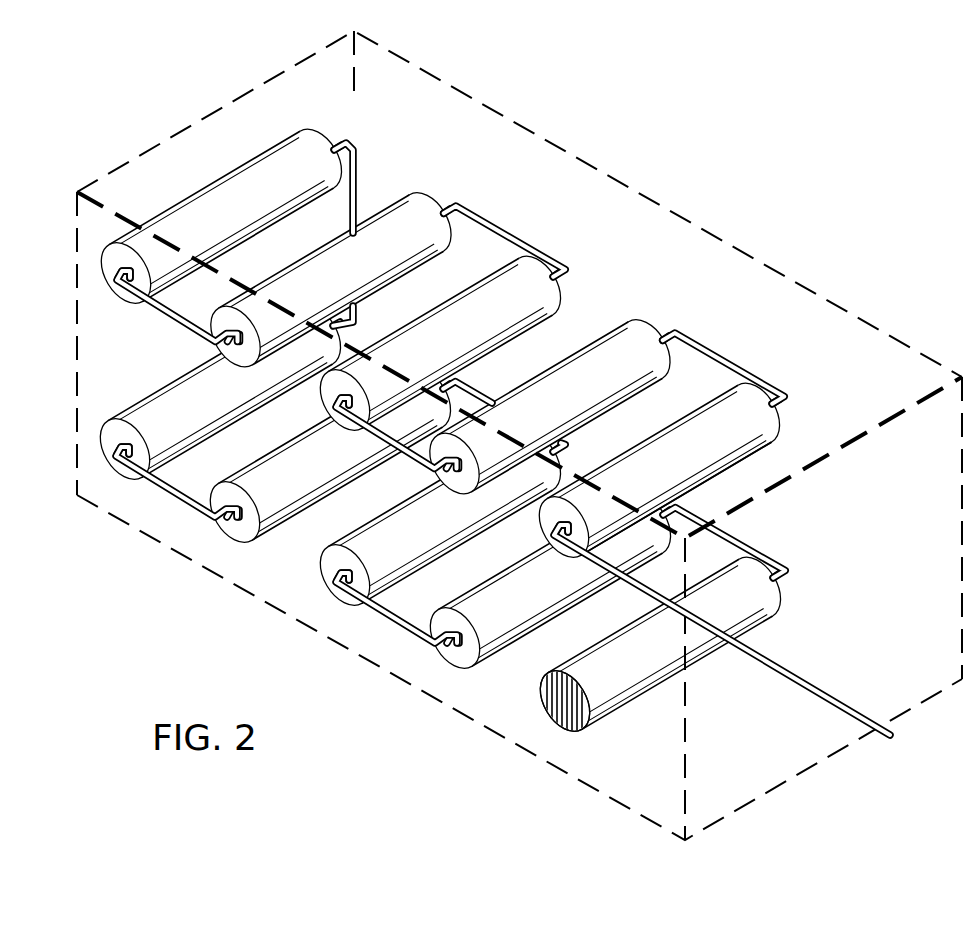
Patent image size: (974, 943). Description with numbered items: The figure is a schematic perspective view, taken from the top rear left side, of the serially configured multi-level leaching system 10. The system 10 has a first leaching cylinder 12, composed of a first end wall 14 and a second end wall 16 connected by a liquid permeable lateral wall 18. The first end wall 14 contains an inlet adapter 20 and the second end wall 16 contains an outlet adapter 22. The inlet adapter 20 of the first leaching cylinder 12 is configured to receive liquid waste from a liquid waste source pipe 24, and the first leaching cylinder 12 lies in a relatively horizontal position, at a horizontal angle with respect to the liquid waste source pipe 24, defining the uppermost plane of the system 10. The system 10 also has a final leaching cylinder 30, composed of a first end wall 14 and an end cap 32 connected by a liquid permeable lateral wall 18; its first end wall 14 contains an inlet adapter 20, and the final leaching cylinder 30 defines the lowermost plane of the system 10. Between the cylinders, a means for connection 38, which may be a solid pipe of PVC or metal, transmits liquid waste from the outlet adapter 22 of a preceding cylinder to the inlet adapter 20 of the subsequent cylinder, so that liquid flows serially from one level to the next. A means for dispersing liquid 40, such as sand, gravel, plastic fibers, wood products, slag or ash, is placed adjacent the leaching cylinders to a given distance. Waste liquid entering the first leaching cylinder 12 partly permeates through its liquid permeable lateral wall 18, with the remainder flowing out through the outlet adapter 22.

The serially configured multi-level leaching system 10 is at (706, 218).
The first leaching cylinder 12 is at (687, 478).
The first end wall 14 is at (559, 546).
The second end wall 16 is at (757, 392).
The liquid permeable lateral wall 18 is at (765, 478).
The inlet adapter 20 is at (440, 212).
The outlet adapter 22 is at (334, 152).
The liquid waste source pipe 24 is at (814, 692).
The final leaching cylinder 30 is at (654, 668).
The end cap 32 is at (581, 728).
The means for connection 38 is at (358, 178).
The means for dispersing liquid 40 is at (900, 694).